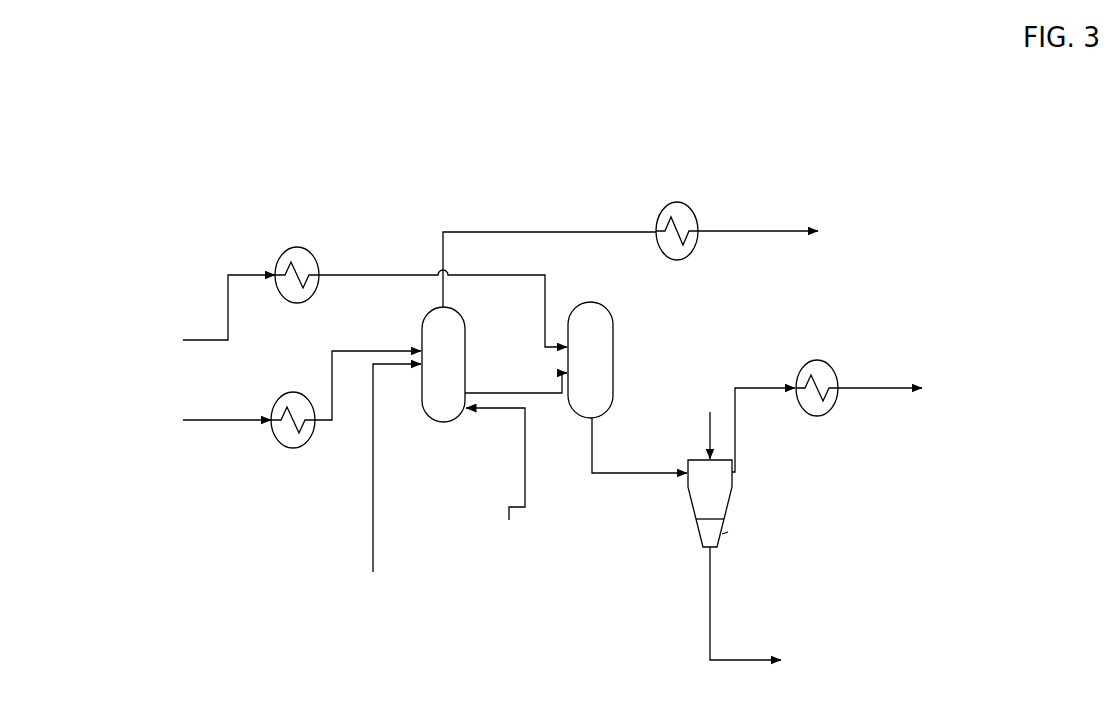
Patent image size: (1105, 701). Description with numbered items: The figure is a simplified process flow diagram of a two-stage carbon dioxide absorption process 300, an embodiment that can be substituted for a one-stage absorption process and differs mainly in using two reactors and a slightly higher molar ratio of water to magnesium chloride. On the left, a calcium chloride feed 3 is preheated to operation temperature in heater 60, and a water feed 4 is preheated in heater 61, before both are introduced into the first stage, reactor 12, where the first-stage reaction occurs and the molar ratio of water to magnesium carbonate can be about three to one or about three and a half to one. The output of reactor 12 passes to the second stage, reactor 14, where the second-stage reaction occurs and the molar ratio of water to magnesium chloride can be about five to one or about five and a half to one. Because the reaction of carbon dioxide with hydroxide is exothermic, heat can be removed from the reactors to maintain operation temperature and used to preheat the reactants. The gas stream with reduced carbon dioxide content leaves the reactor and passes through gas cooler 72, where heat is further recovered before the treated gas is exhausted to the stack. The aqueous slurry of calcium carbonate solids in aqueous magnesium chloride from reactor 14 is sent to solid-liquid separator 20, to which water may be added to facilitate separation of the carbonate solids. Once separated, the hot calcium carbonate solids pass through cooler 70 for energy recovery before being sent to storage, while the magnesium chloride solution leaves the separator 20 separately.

The two-stage CO2 absorption process 300 is at (106, 167).
The heater 60 is at (307, 255).
The heater 61 is at (280, 404).
The calcium chloride feed 3 is at (386, 276).
The water feed 4 is at (386, 351).
The reactor 12 is at (450, 390).
The reactor 14 is at (664, 360).
The gas cooler 72 is at (695, 211).
The cooler 70 is at (828, 410).
The solid-liquid separator 20 is at (744, 510).